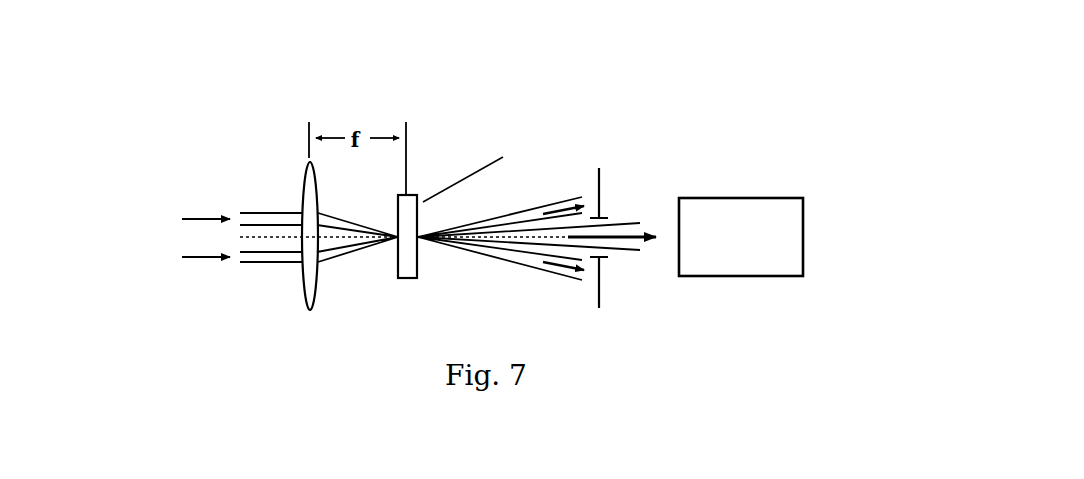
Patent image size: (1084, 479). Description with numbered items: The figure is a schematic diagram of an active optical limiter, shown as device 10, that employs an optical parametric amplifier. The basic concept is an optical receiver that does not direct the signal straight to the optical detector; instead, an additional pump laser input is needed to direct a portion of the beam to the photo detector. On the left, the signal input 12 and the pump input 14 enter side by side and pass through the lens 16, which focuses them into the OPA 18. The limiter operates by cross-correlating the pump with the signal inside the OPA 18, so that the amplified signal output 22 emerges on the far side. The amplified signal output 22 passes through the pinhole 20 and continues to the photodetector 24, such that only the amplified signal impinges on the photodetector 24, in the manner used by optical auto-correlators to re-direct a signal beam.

The device 10 is at (763, 78).
The signal input 12 is at (177, 217).
The pump input 14 is at (182, 257).
The lens 16 is at (310, 312).
The OPA 18 is at (412, 280).
The pinhole 20 is at (599, 308).
The amplified signal output 22 is at (628, 222).
The photodetector 24 is at (803, 247).